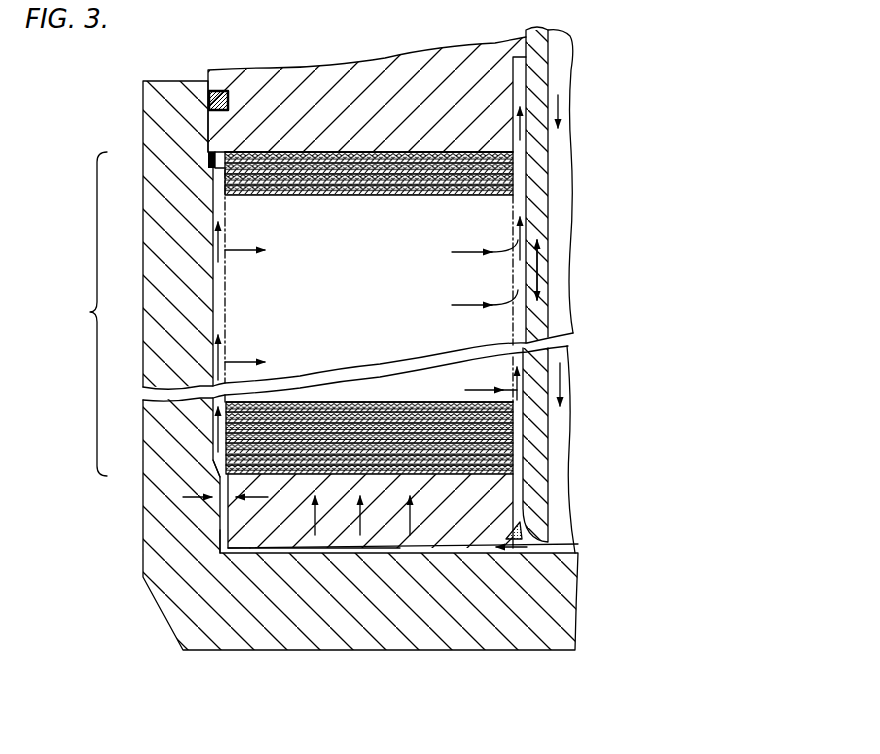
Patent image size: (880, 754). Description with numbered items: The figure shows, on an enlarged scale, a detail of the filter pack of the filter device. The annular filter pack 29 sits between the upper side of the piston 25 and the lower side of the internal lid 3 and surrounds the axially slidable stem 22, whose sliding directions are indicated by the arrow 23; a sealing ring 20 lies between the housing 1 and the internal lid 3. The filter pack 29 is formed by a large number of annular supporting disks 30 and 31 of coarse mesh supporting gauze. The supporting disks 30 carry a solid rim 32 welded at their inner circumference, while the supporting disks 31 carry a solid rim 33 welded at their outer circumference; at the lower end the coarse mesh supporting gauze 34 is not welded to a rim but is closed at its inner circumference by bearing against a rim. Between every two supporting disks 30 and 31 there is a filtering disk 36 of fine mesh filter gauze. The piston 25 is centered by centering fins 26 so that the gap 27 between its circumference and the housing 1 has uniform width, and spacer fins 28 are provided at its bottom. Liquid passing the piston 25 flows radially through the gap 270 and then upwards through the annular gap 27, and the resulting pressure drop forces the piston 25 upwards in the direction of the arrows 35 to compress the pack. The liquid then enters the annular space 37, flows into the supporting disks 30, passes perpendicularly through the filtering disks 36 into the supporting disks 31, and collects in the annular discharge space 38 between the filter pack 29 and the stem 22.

The housing 1 is at (150, 115).
The internal lid 3 is at (268, 80).
The sealing ring 20 is at (208, 100).
The stem 22 is at (545, 83).
The arrow 23 is at (538, 269).
The piston 25 is at (526, 533).
The centering fins 26 is at (218, 535).
The annular gap 27 is at (218, 483).
The spacer fins 28 is at (247, 553).
The filter pack 29 is at (78, 314).
The supporting disk 30 is at (223, 166).
The supporting disk 31 is at (281, 178).
The solid rim 32 is at (513, 162).
The solid rim 33 is at (250, 153).
The coarse mesh supporting gauze 34 is at (452, 477).
The arrows 35 is at (410, 514).
The filtering disk 36 is at (515, 193).
The annular space 37 is at (213, 320).
The annular discharge space 38 is at (518, 278).
The gap 270 is at (325, 571).